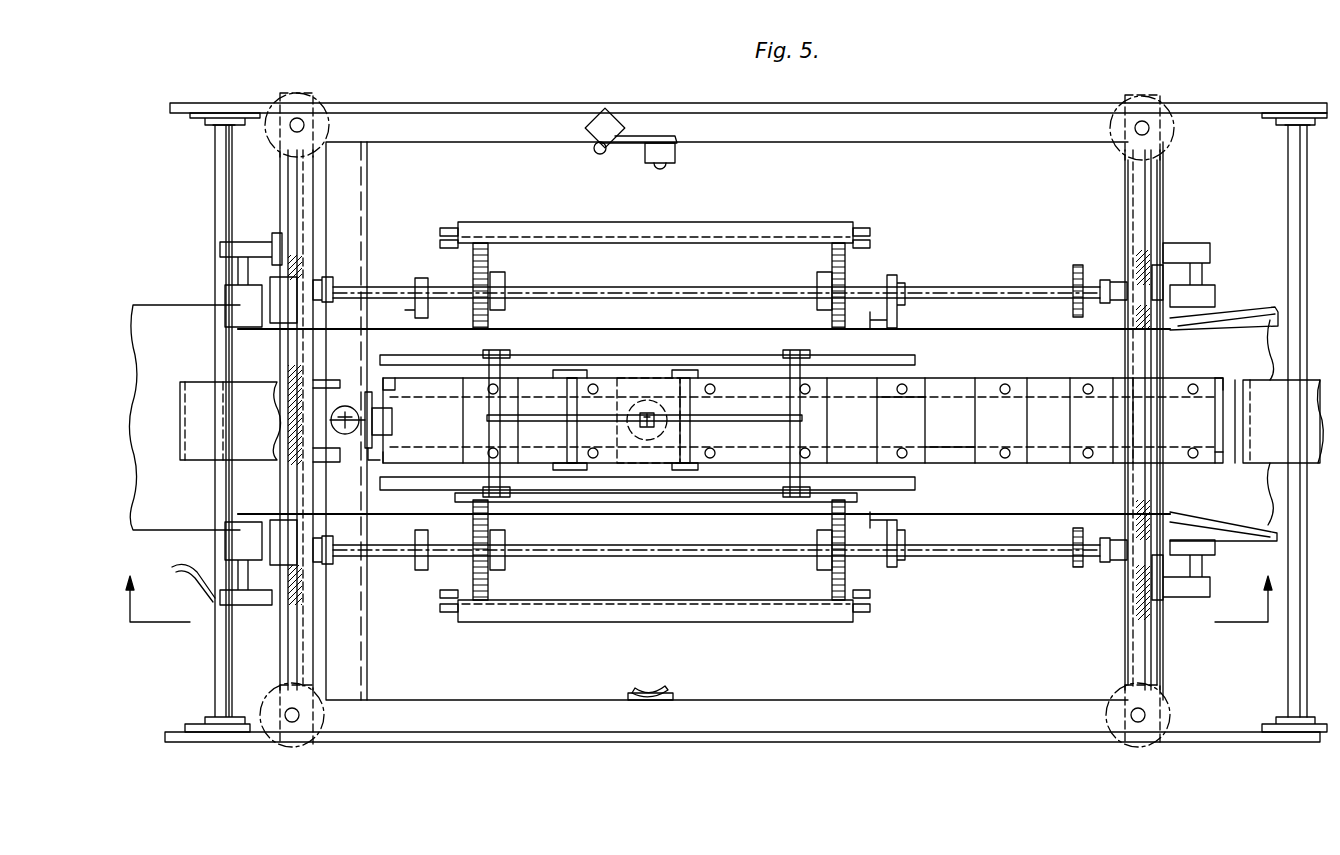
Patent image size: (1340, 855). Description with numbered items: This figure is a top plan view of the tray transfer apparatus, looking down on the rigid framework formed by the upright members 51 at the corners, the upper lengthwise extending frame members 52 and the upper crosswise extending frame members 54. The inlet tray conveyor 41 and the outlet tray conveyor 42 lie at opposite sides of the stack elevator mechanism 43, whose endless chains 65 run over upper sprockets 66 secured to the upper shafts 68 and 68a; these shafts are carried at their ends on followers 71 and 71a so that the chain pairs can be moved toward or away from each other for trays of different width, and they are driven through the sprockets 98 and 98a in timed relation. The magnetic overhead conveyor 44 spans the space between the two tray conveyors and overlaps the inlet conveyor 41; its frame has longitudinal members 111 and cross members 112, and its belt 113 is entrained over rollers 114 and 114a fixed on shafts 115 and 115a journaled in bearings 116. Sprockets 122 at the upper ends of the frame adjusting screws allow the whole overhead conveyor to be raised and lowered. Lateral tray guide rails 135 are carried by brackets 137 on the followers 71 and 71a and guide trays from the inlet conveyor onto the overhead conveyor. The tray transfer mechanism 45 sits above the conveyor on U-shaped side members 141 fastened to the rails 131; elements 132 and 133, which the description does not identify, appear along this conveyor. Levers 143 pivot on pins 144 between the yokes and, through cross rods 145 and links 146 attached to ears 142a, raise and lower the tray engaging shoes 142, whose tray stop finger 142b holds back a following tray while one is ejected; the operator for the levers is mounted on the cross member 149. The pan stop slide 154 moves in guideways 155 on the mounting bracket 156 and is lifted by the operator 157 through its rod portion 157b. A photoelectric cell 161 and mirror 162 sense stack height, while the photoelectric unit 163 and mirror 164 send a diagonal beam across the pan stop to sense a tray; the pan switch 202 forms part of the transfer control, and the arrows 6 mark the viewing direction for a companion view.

The view direction arrow 6 is at (158, 599).
The inlet tray conveyor 41 is at (1228, 318).
The outlet tray conveyor 42 is at (178, 325).
The stack elevator mechanism 43 is at (825, 578).
The magnetic overhead conveyor 44 is at (1012, 378).
The tray transfer mechanism 45 is at (600, 370).
The upright members 51 is at (1162, 722).
The upper lengthwise extending frame members 52 is at (873, 716).
The upper crosswise extending frame members 54 is at (1160, 198).
The endless chains 65 is at (490, 580).
The upper sprockets 66 is at (832, 262).
The upper shaft 68 is at (940, 555).
The upper shaft 68a is at (918, 292).
The follower 71 is at (1110, 570).
The follower 71a is at (1115, 285).
The sprocket 98 is at (1073, 565).
The sprocket 98a is at (1073, 272).
The longitudinal members 111 is at (636, 742).
The cross members 112 is at (313, 658).
The belt 113 is at (1232, 443).
The roller 114 is at (1250, 465).
The roller 114a is at (180, 463).
The shaft 115 is at (1285, 557).
The shaft 115a is at (212, 665).
The bearings 116 is at (1282, 118).
The sprockets 122 is at (322, 718).
The rails 131 is at (960, 455).
The beam member 132 is at (912, 422).
The holes 133 is at (906, 390).
The lateral tray guide rails 135 is at (962, 335).
The brackets 137 is at (285, 320).
The U-shaped side members 141 is at (700, 378).
The tray engaging shoes 142 is at (400, 355).
The ears 142a is at (812, 480).
The tray stop finger 142b is at (916, 485).
The levers 143 is at (560, 420).
The pins 144 is at (577, 425).
The cross rods 145 is at (800, 413).
The links 146 is at (782, 505).
The cross member 149 is at (660, 385).
The slide 154 is at (392, 432).
The guideways 155 is at (370, 450).
The mounting bracket 156 is at (348, 610).
The operator 157 is at (342, 435).
The rod portion 157b is at (345, 406).
The photoelectric cell 161 is at (665, 168).
The mirror 162 is at (660, 692).
The photoelectric unit 163 is at (620, 158).
The mirror 164 is at (192, 576).
The normally open pan switch 202 is at (392, 420).